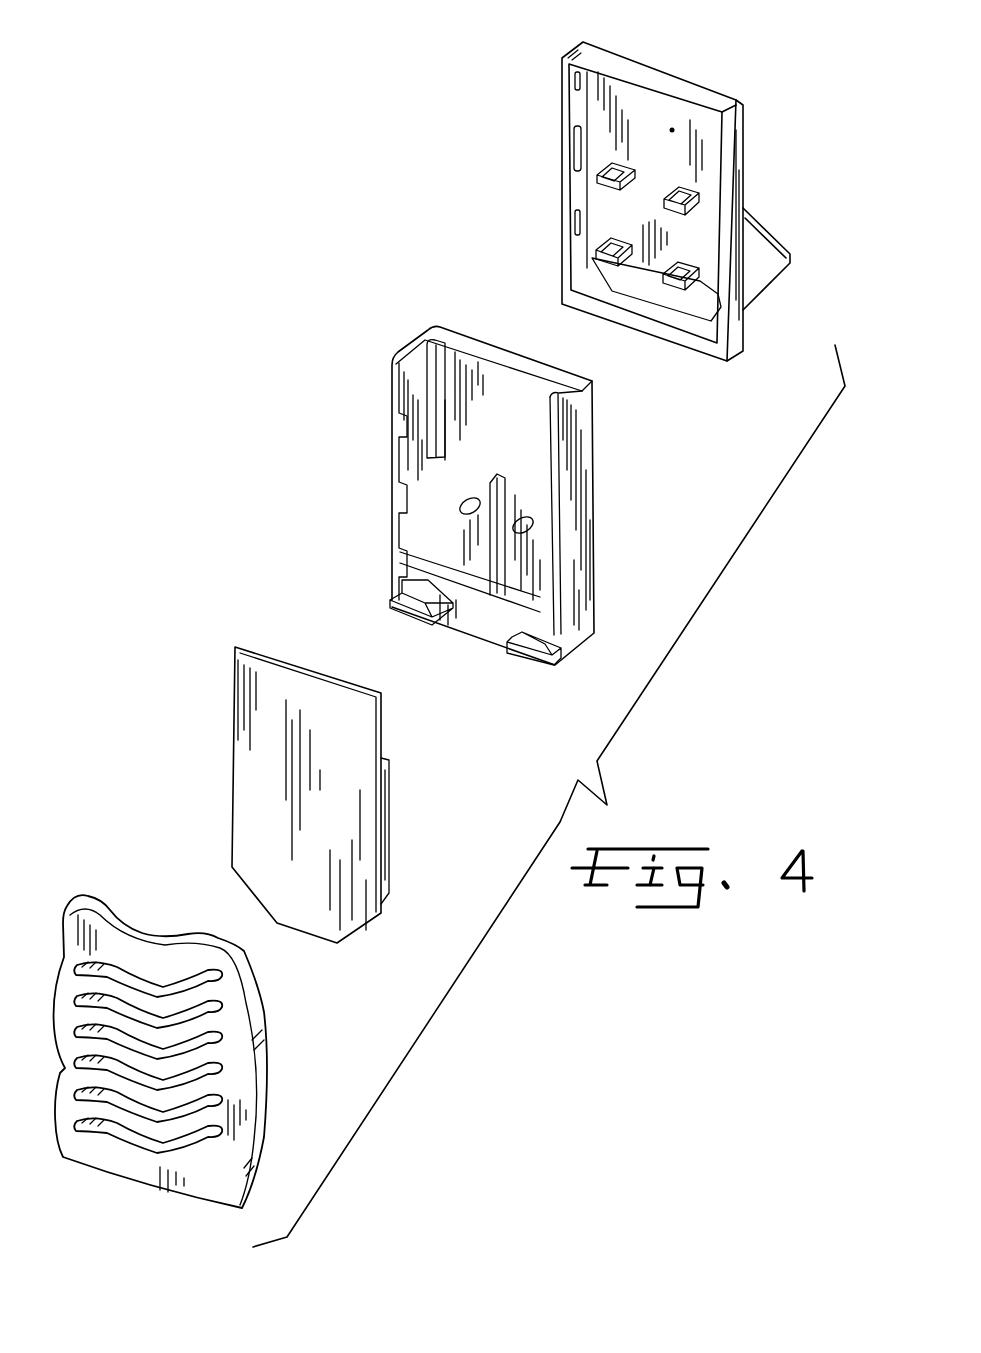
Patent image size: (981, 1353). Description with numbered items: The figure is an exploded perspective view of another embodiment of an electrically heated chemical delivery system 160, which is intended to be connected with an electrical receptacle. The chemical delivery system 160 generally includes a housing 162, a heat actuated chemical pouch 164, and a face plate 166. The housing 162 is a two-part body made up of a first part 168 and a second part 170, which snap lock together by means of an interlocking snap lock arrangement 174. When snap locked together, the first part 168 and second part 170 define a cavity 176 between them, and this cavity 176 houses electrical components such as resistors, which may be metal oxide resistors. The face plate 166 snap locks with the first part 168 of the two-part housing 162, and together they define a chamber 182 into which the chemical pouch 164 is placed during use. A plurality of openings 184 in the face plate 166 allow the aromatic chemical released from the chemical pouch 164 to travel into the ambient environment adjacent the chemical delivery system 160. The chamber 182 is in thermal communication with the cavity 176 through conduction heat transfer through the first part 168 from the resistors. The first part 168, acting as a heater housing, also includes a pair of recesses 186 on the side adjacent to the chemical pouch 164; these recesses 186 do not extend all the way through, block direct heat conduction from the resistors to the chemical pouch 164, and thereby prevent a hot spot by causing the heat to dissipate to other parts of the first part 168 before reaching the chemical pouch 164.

The electrically heated chemical delivery system 160 is at (343, 208).
The housing 162 is at (540, 240).
The heat actuated chemical pouch 164 is at (218, 632).
The face plate 166 is at (191, 993).
The first part 168 is at (595, 550).
The second part 170 is at (725, 362).
The interlocking snap lock arrangement 174 is at (577, 139).
The cavity 176 is at (672, 130).
The chamber 182 is at (510, 392).
The openings 184 is at (217, 1017).
The recesses 186 is at (523, 518).